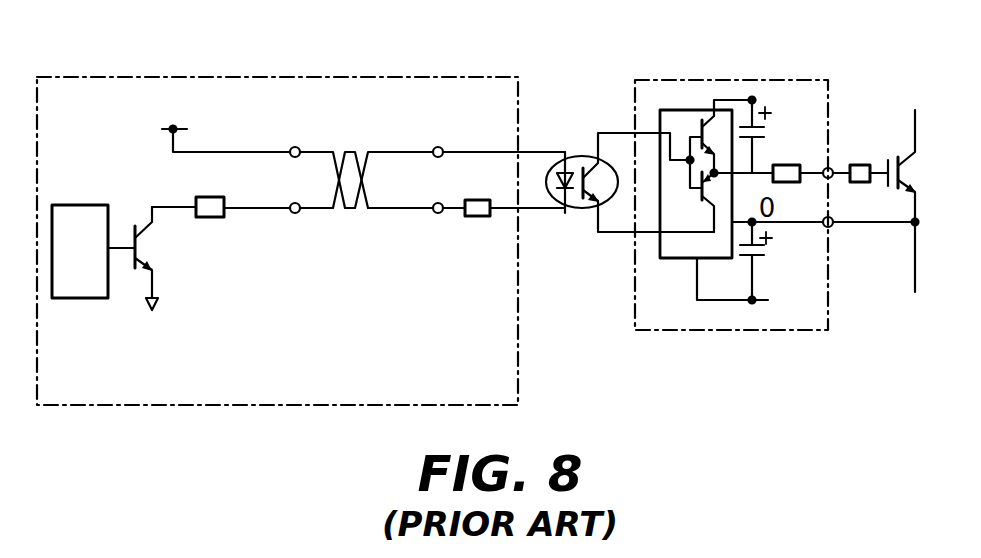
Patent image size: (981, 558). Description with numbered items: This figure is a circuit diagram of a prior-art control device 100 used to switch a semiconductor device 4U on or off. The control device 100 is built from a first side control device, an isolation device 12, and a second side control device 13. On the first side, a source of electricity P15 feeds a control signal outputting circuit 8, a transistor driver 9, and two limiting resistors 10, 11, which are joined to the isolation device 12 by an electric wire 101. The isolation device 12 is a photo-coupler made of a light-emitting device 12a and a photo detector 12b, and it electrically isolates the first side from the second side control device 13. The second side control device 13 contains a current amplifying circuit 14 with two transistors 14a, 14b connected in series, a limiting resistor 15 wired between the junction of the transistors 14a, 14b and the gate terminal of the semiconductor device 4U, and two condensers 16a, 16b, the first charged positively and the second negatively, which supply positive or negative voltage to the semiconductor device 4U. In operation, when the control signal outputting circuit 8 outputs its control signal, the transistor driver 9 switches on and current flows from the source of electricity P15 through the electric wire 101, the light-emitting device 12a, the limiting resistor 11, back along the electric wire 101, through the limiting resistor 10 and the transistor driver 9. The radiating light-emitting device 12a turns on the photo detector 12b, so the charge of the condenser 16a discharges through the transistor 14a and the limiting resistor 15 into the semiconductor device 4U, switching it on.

The control device 100 is at (510, 38).
The control signal outputting circuit 8 is at (77, 205).
The transistor driver 9 is at (146, 247).
The limiting resistor 10 is at (208, 218).
The source of electricity P15 is at (226, 134).
The electric wire 101 is at (397, 152).
The limiting resistor 11 is at (472, 218).
The isolation device 12 is at (618, 193).
The light-emitting device 12a is at (568, 213).
The photo detector 12b is at (588, 207).
The second side control device 13 is at (813, 330).
The current amplifying circuit 14 is at (685, 171).
The transistor 14a is at (702, 120).
The transistor 14b is at (692, 200).
The limiting resistor 15 is at (793, 162).
The condenser 16a is at (768, 128).
The condenser 16b is at (765, 251).
The semiconductor device 4U is at (903, 157).